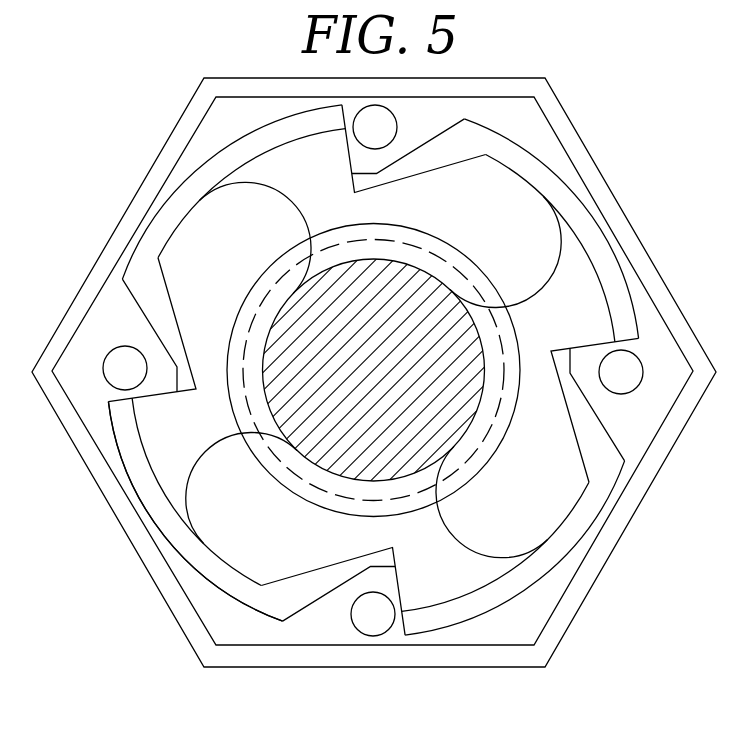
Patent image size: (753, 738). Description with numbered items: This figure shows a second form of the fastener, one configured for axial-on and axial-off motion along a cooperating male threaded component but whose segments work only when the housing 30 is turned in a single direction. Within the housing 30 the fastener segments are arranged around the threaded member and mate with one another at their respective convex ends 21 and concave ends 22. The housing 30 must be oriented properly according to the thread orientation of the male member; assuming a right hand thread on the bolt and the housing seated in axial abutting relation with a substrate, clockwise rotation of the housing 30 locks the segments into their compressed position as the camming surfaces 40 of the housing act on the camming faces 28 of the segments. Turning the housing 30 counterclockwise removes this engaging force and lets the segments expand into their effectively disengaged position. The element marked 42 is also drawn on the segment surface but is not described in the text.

The fastener housing 30 is at (98, 211).
The camming faces 28 is at (160, 277).
The camming surfaces 40 is at (153, 330).
The outer surface of spring arm 42 is at (207, 577).
The convex ends 21 is at (528, 260).
The concave ends 22 is at (545, 305).